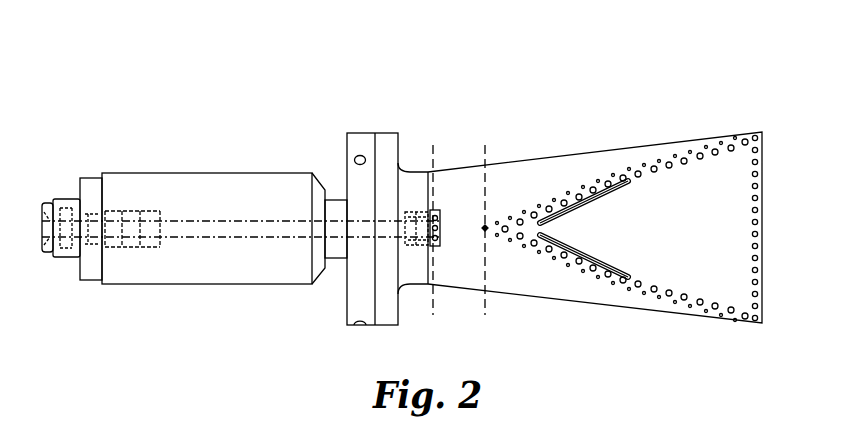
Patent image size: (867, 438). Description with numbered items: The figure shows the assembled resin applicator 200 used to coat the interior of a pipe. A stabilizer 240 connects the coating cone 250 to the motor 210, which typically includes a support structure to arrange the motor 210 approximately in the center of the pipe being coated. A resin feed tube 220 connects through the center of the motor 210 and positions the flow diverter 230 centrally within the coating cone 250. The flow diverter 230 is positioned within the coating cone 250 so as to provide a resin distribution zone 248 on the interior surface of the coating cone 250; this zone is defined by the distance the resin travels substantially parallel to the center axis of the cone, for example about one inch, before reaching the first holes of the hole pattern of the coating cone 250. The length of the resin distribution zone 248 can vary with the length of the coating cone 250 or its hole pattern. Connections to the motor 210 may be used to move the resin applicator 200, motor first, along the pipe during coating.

The resin applicator 200 is at (650, 61).
The motor 210 is at (208, 173).
The resin feed tube 220 is at (208, 238).
The stabilizer 240 is at (361, 133).
The resin distribution zone 248 is at (458, 168).
The flow diverter 230 is at (437, 248).
The coating cone 250 is at (598, 151).